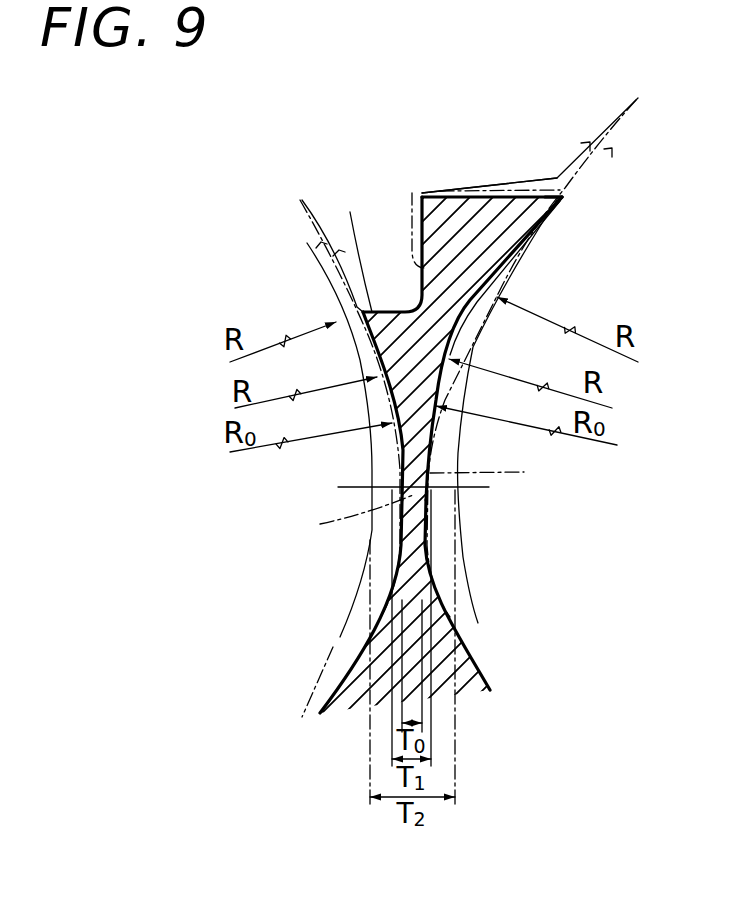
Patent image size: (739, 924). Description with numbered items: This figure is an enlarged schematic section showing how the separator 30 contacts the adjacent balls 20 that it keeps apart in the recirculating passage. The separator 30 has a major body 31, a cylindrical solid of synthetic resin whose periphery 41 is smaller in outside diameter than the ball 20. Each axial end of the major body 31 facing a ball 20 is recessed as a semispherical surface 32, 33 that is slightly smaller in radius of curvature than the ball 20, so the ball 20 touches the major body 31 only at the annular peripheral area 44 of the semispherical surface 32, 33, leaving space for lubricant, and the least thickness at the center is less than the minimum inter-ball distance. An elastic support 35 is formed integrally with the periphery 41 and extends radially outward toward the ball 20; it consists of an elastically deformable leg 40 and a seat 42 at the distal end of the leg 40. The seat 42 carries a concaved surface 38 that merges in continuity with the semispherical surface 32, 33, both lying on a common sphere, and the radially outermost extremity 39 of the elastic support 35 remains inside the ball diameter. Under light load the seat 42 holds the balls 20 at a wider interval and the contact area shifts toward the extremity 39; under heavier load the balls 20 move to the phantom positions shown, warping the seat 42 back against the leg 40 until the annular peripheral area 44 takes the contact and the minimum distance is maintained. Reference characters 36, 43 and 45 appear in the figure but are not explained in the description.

The ball 20 is at (470, 343).
The separator 30 is at (391, 225).
The major body 31 is at (405, 355).
The semispherical surface 32 is at (402, 464).
The semispherical surface 33 is at (430, 460).
The elastic support 35 is at (485, 225).
The chain line of head 36 is at (417, 267).
The concaved surface 38 is at (517, 238).
The radially outermost extremity 39 is at (561, 200).
The elastically deformable leg 40 is at (421, 303).
The periphery 41 is at (352, 245).
The seat 42 is at (455, 240).
The narrowest section 43 is at (396, 500).
The annular peripheral area 44 is at (365, 318).
The center line 45 is at (422, 498).